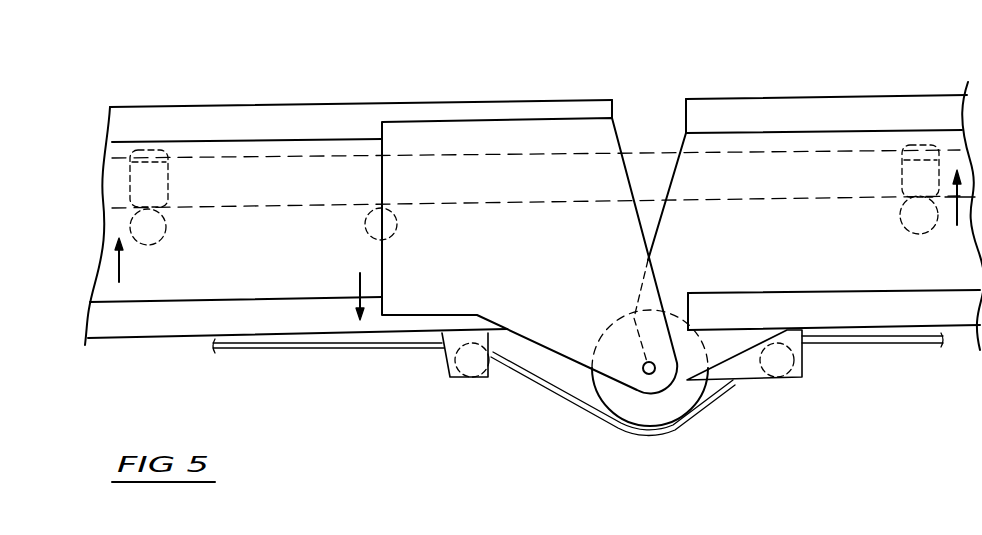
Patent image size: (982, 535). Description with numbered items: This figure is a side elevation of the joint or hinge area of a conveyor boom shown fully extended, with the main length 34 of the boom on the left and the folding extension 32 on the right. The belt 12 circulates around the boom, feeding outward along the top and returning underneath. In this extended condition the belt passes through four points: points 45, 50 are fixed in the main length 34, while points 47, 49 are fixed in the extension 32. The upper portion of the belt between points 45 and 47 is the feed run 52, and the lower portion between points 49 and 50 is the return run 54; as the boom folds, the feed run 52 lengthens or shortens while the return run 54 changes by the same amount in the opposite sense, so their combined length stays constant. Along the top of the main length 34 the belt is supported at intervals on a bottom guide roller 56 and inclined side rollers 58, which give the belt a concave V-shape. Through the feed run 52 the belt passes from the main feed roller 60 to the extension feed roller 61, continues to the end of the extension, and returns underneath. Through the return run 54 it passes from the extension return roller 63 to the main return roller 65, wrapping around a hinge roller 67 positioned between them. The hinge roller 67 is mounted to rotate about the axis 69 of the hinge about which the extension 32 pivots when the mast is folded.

The belt 12 is at (212, 163).
The folding extension 32 is at (797, 94).
The main length of the boom 34 is at (292, 96).
The point 45 is at (118, 270).
The point 47 is at (958, 222).
The point 49 is at (834, 308).
The point 50 is at (358, 277).
The feed run 52 is at (541, 190).
The return run 54 is at (555, 395).
The bottom guide roller 56 is at (158, 243).
The side rollers 58 is at (130, 186).
The main feed roller 60 is at (363, 213).
The extension feed roller 61 is at (905, 213).
The extension return roller 63 is at (780, 378).
The main return roller 65 is at (467, 382).
The hinge roller 67 is at (632, 408).
The axis of the hinge 69 is at (643, 362).